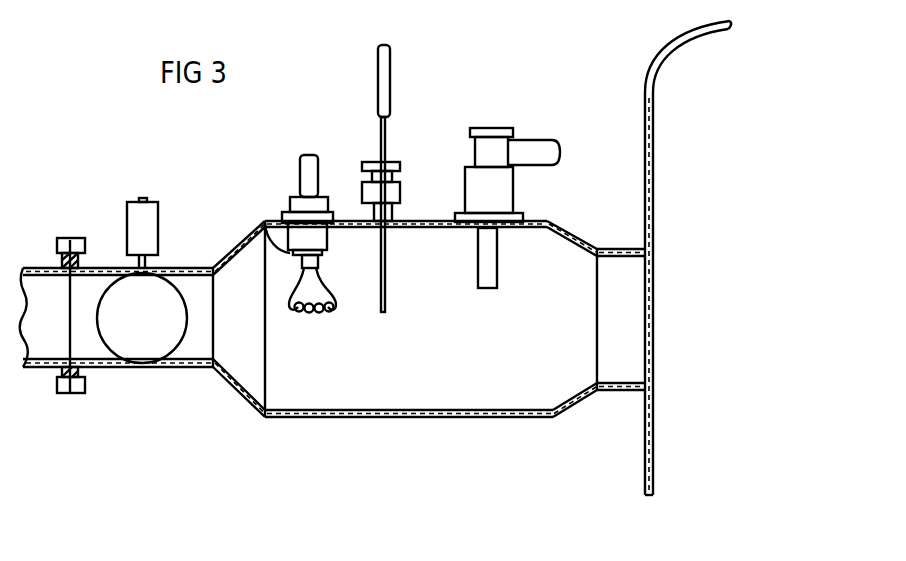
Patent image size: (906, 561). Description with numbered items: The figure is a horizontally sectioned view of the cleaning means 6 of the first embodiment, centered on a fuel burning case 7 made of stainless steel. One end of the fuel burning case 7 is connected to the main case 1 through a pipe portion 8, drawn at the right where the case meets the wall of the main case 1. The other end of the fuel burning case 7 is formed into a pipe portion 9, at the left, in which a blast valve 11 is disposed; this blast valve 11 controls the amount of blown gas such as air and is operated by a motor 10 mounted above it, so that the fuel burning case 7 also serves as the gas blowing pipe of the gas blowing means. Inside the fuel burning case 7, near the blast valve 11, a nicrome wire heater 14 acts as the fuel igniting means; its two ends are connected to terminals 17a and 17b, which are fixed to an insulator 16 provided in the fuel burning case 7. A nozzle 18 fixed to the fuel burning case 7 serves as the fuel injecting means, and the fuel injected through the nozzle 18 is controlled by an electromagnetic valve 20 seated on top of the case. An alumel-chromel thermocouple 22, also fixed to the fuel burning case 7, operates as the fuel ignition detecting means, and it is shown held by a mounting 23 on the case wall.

The main case 1 is at (668, 48).
The cleaning means 6 is at (455, 420).
The fuel burning case 7 is at (242, 246).
The pipe portion 8 is at (617, 249).
The pipe portion 9 is at (195, 268).
The motor 10 is at (137, 223).
The blast valve 11 is at (153, 340).
The nicrome wire heater 14 is at (312, 314).
The insulator 16 is at (272, 218).
The terminal 17a is at (300, 271).
The terminal 17b is at (318, 270).
The nozzle 18 is at (498, 262).
The electromagnetic valve 20 is at (470, 185).
The alumel-chromel thermocouple 22 is at (383, 260).
The mounting nut 23 is at (397, 183).